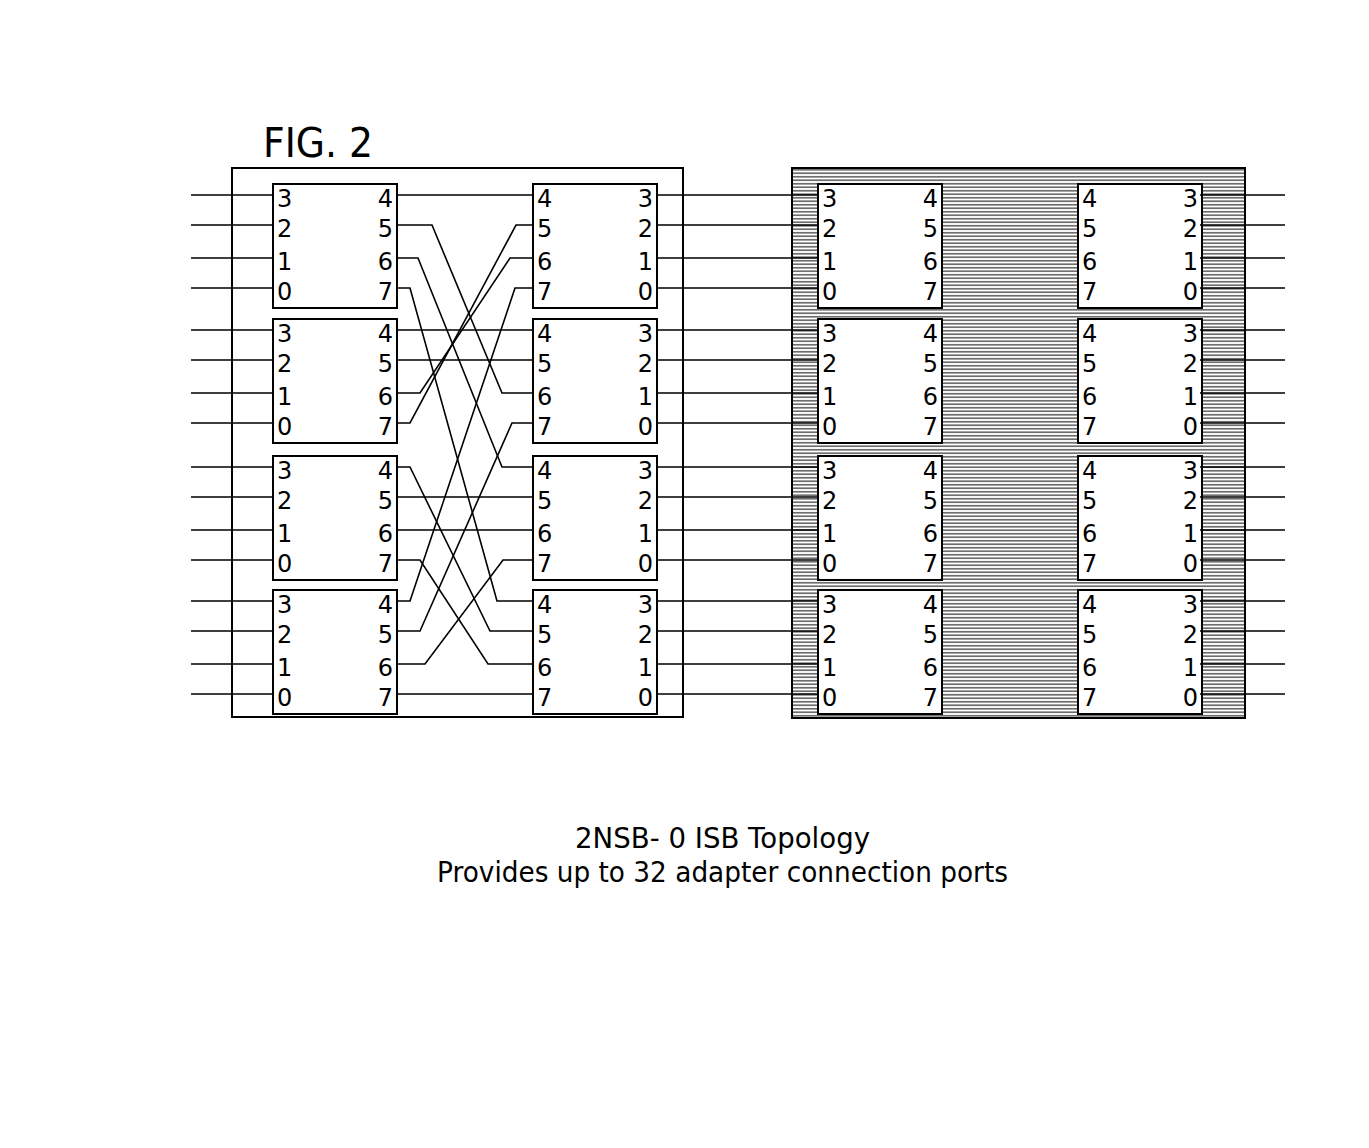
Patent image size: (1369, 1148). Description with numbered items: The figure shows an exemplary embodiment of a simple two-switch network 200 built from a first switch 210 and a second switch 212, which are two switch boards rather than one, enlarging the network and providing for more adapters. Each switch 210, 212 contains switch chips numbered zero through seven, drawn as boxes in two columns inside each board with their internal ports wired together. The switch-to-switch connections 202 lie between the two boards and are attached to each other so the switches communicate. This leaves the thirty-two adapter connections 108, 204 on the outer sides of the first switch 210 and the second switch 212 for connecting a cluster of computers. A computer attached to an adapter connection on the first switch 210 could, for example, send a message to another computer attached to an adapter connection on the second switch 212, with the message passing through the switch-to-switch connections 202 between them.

The simple two-switch network 200 is at (1145, 149).
The first switch 210 is at (430, 168).
The second switch 212 is at (1036, 168).
The adapter connections 108 is at (228, 720).
The switch-to-switch connections 202 is at (770, 720).
The adapter connections 204 is at (1313, 720).